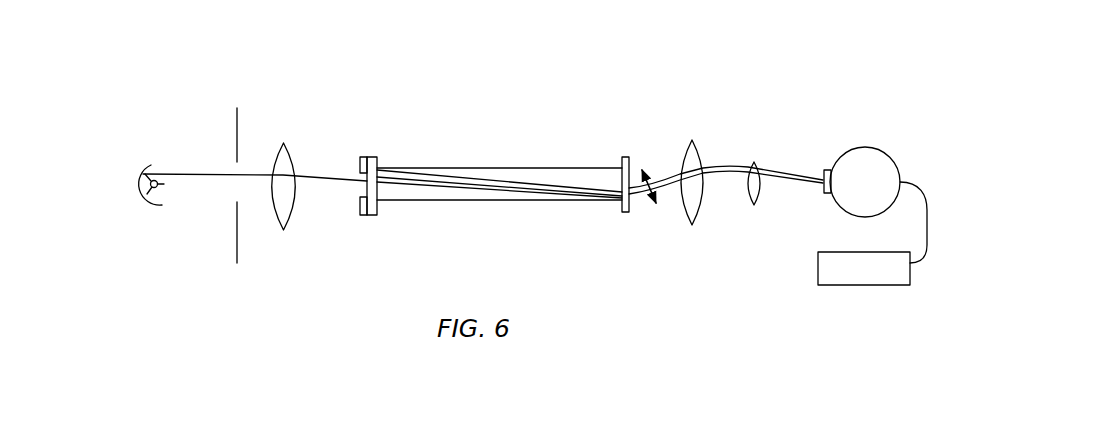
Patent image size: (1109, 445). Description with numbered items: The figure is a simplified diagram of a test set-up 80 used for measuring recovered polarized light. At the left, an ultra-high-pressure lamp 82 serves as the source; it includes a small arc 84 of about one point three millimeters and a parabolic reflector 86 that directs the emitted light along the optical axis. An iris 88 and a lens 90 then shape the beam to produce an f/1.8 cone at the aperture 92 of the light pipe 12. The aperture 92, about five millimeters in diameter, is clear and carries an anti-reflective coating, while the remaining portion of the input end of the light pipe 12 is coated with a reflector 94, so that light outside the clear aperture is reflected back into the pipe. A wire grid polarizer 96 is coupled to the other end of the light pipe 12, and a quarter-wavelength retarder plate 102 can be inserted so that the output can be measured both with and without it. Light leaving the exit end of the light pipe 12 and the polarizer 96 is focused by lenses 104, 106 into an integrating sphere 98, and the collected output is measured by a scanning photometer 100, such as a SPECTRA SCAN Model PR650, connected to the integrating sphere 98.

The test set-up 80 is at (114, 104).
The ultra-high-pressure lamp 82 is at (136, 173).
The arc 84 is at (158, 196).
The parabolic reflector 86 is at (152, 165).
The iris 88 is at (235, 140).
The lens 90 is at (273, 208).
The aperture 92 is at (359, 184).
The reflector 94 is at (360, 163).
The quarter-wavelength retarder plate 102 is at (378, 163).
The light pipe 12 is at (547, 167).
The wire grid polarizer 96 is at (626, 157).
The lens 104 is at (700, 208).
The lens 106 is at (753, 192).
The integrating sphere 98 is at (866, 147).
The scanning photometer 100 is at (818, 268).